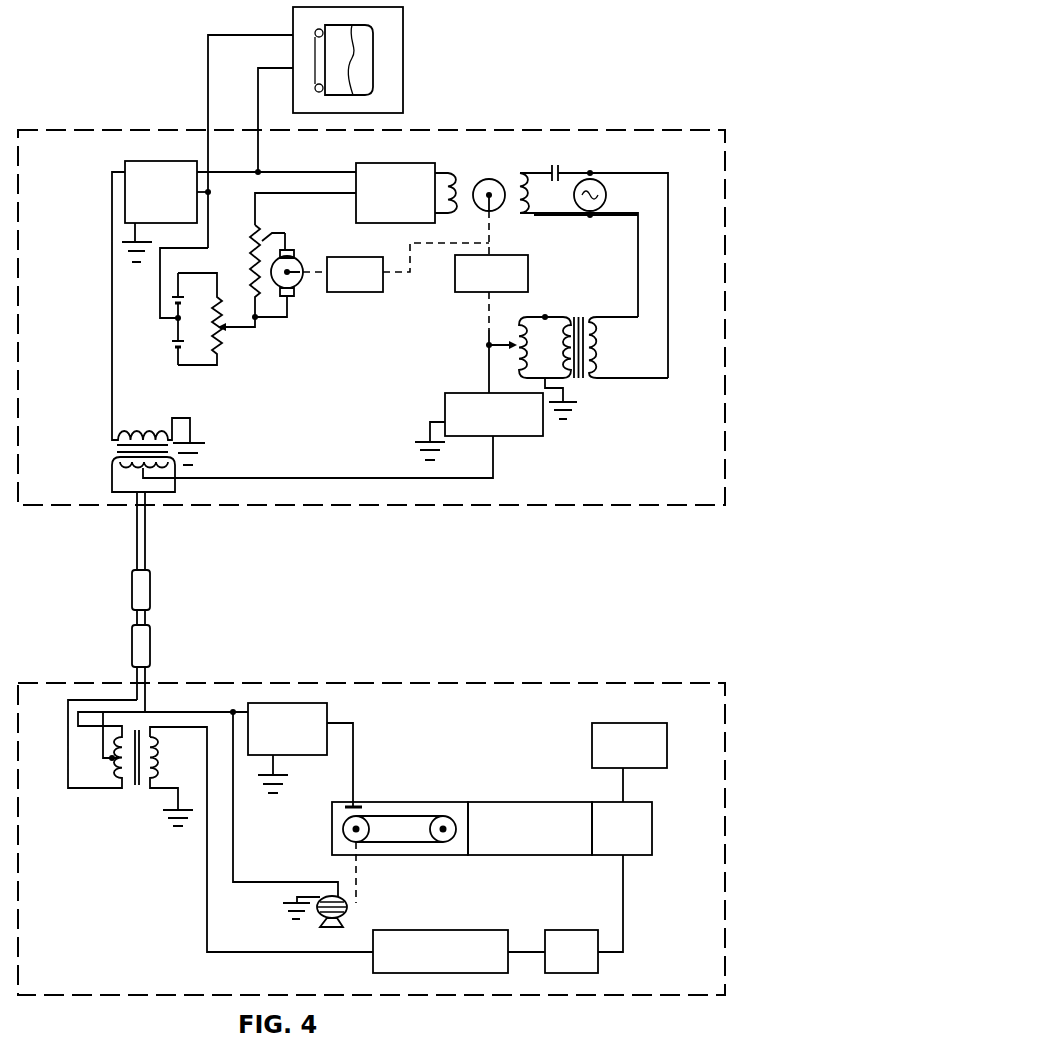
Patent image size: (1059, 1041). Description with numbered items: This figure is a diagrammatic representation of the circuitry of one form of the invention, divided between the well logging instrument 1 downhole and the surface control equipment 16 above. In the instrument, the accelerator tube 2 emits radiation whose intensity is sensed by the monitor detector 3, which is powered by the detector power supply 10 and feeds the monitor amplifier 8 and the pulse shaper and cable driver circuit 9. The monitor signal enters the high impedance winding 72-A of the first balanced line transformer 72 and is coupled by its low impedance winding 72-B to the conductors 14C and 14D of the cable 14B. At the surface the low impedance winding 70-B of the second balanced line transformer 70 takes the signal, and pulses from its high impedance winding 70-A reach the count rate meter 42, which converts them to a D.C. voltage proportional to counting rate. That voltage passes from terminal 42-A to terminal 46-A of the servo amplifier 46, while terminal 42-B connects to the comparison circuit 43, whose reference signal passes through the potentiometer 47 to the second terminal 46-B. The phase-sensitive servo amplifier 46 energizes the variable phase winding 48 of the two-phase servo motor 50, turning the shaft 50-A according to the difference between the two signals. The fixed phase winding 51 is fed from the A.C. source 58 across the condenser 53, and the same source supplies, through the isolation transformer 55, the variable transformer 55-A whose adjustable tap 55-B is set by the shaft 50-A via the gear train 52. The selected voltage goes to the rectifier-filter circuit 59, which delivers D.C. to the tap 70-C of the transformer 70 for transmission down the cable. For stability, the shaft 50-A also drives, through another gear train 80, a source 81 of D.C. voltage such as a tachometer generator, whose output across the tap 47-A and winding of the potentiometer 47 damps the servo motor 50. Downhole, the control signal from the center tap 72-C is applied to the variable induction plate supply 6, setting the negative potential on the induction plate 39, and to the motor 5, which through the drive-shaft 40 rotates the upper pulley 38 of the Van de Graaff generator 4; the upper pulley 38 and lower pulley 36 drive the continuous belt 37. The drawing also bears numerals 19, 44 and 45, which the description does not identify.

The well logging instrument 1 is at (655, 683).
The accelerator tube 2 is at (517, 800).
The monitor detector 3 is at (648, 800).
The Van de Graaff generator 4 is at (430, 800).
The motor 5 is at (348, 908).
The variable induction plate supply 6 is at (327, 707).
The monitor amplifier 8 is at (578, 929).
The pulse shaper and cable driver circuit 9 is at (483, 929).
The detector power supply 10 is at (667, 750).
The cable 14B is at (150, 584).
The conductor 14C is at (135, 672).
The conductor 14D is at (146, 677).
The surface control equipment 16 is at (640, 506).
The recorder 19 is at (405, 22).
The lower pulley 36 is at (432, 834).
The continuous belt 37 is at (401, 843).
The upper pulley 38 is at (375, 828).
The induction plate 39 is at (354, 802).
The drive-shaft 40 is at (356, 854).
The count rate meter 42 is at (177, 162).
The terminal 42-A is at (256, 170).
The terminal 42-B is at (200, 192).
The comparison circuit 43 is at (217, 364).
The battery 44 is at (184, 302).
The potentiometer 45 is at (221, 299).
The servo amplifier 46 is at (413, 162).
The terminal 46-A is at (305, 172).
The second terminal 46-B is at (312, 193).
The potentiometer 47 is at (251, 257).
The tap 47-A is at (266, 239).
The variable phase winding 48 is at (463, 180).
The two-phase servo motor 50 is at (498, 184).
The shaft 50-A is at (483, 243).
The fixed phase winding 51 is at (510, 180).
The gear train 52 is at (528, 262).
The condenser 53 is at (557, 163).
The isolation transformer 55 is at (580, 318).
The variable transformer 55-A is at (547, 304).
The adjustable tap 55-B is at (489, 344).
The A.C. source 58 is at (606, 194).
The rectifier-filter circuit 59 is at (470, 392).
The second balanced line transformer 70 is at (118, 451).
The high impedance winding 70-A is at (117, 434).
The low impedance winding 70-B is at (112, 485).
The tap 70-C is at (243, 478).
The first balanced line transformer 72 is at (137, 732).
The high impedance winding 72-A is at (157, 744).
The low impedance winding 72-B is at (114, 738).
The center tap 72-C is at (161, 712).
The gear train 80 is at (345, 257).
The source of D.C. voltage 81 is at (295, 264).